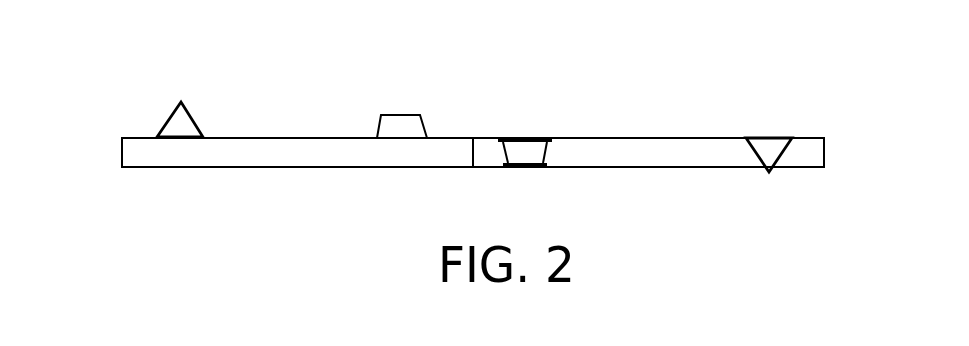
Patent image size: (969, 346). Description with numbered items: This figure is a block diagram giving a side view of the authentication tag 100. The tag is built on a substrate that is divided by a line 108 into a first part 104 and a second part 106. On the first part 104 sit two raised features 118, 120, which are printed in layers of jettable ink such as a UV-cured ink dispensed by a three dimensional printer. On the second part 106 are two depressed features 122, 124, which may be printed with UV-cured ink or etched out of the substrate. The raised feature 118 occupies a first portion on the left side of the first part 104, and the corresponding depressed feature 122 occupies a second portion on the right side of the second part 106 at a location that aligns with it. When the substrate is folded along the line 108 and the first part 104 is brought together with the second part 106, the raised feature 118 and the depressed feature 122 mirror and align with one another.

The authentication tag 100 is at (676, 58).
The first part 104 is at (122, 152).
The second part 106 is at (825, 148).
The line 108 is at (473, 167).
The raised feature 118 is at (190, 119).
The raised feature 120 is at (402, 113).
The depressed feature 122 is at (769, 135).
The depressed feature 124 is at (525, 137).